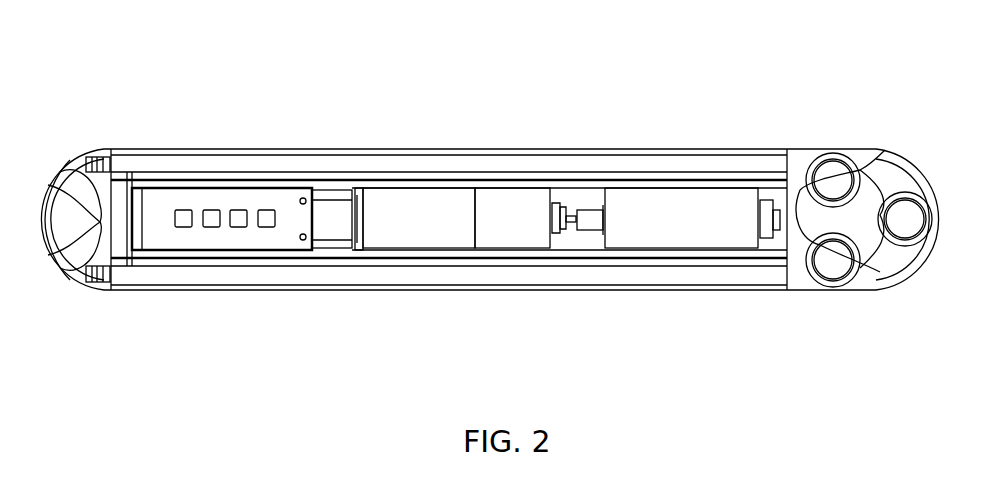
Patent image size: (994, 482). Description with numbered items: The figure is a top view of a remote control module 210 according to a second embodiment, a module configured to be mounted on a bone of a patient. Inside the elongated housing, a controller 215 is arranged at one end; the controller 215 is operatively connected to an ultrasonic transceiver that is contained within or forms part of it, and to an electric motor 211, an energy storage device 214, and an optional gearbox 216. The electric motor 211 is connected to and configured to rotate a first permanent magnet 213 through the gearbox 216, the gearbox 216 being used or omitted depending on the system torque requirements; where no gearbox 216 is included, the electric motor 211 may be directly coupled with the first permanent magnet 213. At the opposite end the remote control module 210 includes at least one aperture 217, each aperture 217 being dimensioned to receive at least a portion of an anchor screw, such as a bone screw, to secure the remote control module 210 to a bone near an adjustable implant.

The remote control module 210 is at (687, 57).
The electric motor 211 is at (418, 232).
The first permanent magnet 213 is at (663, 232).
The energy storage device 214 is at (338, 232).
The controller 215 is at (222, 232).
The gearbox 216 is at (503, 230).
The aperture 217 is at (900, 222).